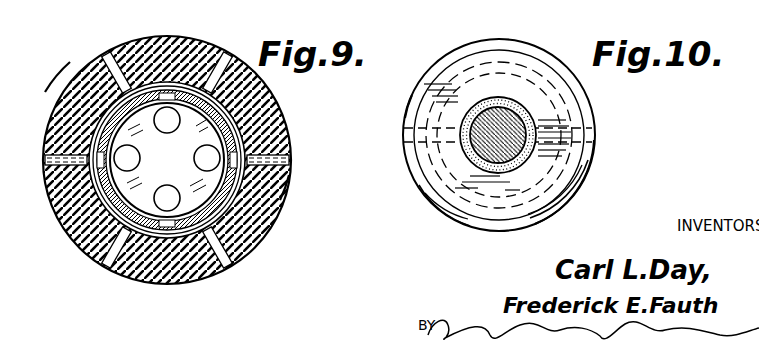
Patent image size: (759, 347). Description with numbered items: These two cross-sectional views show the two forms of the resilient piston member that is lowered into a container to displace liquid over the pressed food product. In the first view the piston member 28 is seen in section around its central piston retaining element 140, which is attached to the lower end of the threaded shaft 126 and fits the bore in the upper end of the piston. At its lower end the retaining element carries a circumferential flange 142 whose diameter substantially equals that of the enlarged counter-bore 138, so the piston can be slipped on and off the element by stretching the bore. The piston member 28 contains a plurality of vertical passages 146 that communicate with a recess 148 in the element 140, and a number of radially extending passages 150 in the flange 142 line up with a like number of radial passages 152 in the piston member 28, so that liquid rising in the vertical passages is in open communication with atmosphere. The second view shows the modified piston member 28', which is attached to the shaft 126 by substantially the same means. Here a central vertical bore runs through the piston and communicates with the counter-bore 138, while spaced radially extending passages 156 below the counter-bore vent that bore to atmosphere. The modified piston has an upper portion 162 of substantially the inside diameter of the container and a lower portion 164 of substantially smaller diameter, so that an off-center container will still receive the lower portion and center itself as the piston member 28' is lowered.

In FIG. 9, the piston member 28 is at (190, 160).
In FIG. 10, the modified piston member 28' is at (530, 135).
In FIG. 10, the threaded shaft 126 is at (515, 120).
In FIG. 10, the counter-bore 138 is at (560, 212).
In FIG. 9, the piston retaining element 140 is at (66, 96).
In FIG. 10, the piston retaining element 140 is at (448, 202).
In FIG. 9, the circumferential flange 142 is at (286, 189).
In FIG. 9, the vertical passages 146 is at (178, 199).
In FIG. 9, the recess 148 is at (57, 213).
In FIG. 9, the radially extending passages 150 is at (148, 285).
In FIG. 9, the radial passages 152 is at (112, 258).
In FIG. 10, the radially extending passages 156 is at (598, 135).
In FIG. 10, the upper portion 162 is at (406, 108).
In FIG. 10, the lower portion 164 is at (536, 219).